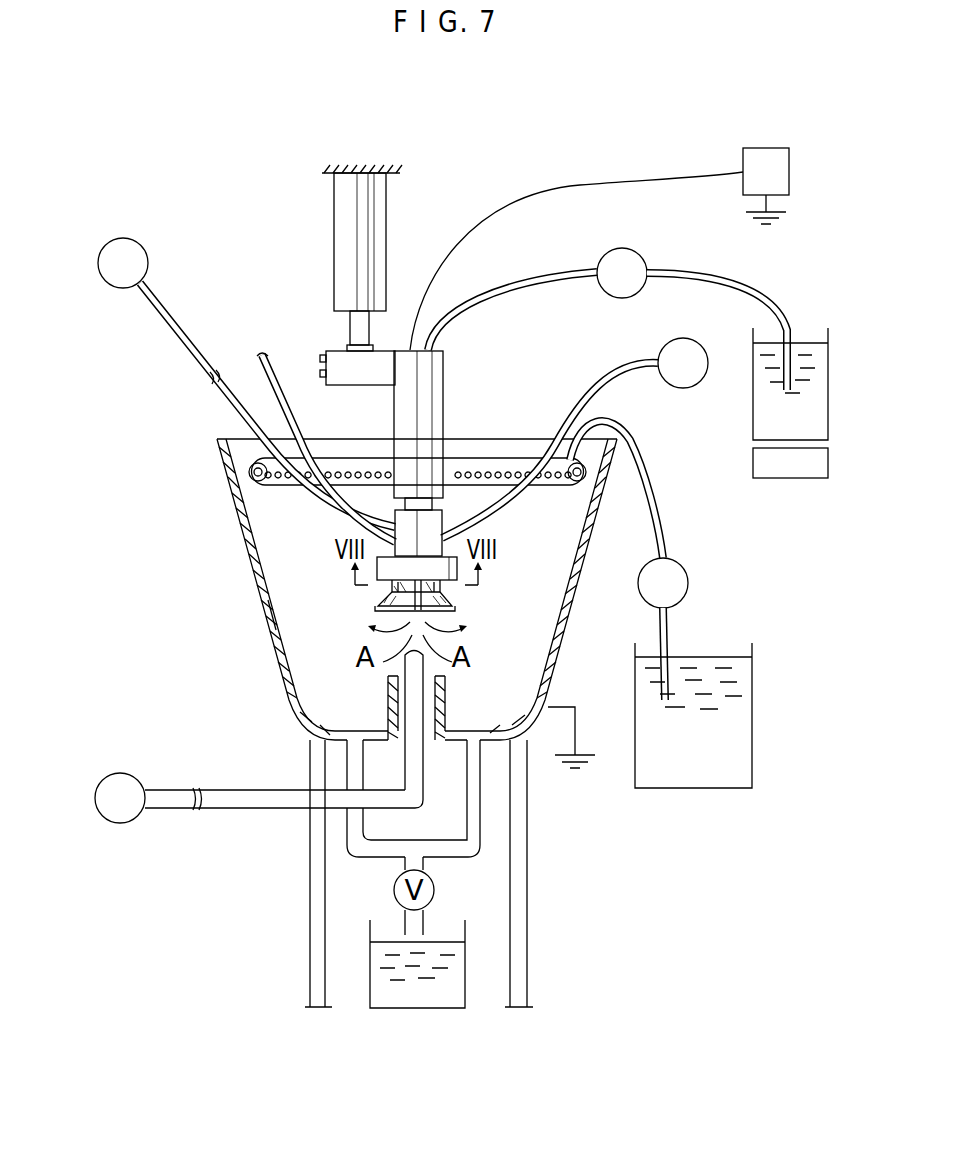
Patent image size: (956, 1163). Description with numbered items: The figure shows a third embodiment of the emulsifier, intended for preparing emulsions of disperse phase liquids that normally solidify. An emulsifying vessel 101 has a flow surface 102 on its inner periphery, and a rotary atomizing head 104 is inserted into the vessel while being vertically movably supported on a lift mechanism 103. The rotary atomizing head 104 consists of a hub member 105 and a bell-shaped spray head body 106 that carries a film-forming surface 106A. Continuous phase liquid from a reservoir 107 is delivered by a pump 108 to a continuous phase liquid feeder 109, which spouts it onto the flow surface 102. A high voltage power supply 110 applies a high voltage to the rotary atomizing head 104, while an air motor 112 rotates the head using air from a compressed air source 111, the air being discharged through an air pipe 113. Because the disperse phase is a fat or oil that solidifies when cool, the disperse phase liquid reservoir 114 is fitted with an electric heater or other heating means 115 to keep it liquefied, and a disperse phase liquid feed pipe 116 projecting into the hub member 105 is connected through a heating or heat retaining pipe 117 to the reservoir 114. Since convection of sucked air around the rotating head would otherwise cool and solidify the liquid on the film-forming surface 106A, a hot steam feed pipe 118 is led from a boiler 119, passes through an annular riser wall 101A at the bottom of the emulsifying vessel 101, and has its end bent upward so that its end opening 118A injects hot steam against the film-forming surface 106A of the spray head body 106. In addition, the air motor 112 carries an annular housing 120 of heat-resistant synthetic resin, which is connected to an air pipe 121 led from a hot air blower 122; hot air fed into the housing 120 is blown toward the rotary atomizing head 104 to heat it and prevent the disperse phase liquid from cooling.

The emulsifying vessel 101 is at (245, 540).
The annular riser wall 101A is at (447, 697).
The flow surface 102 is at (263, 630).
The lift mechanism 103 is at (334, 216).
The rotary atomizing head 104 is at (445, 604).
The hub member 105 is at (390, 588).
The bell-shaped spray head body 106 is at (450, 614).
The film-forming surface 106A is at (373, 614).
The reservoir 107 is at (745, 745).
The pump 108 is at (690, 583).
The continuous phase liquid feeder 109 is at (476, 462).
The high voltage power supply 110 is at (760, 148).
The compressed air source 111 is at (122, 238).
The air motor 112 is at (442, 525).
The air pipe 113 is at (278, 385).
The disperse phase liquid reservoir 114 is at (753, 411).
The heating means 115 is at (753, 466).
The disperse phase liquid feed pipe 116 is at (455, 590).
The heating or heat retaining pipe 117 is at (527, 282).
The hot steam feed pipe 118 is at (250, 800).
The end opening 118A is at (395, 660).
The boiler 119 is at (120, 818).
The annular housing 120 is at (375, 570).
The air pipe 121 is at (590, 362).
The hot air blower 122 is at (683, 338).